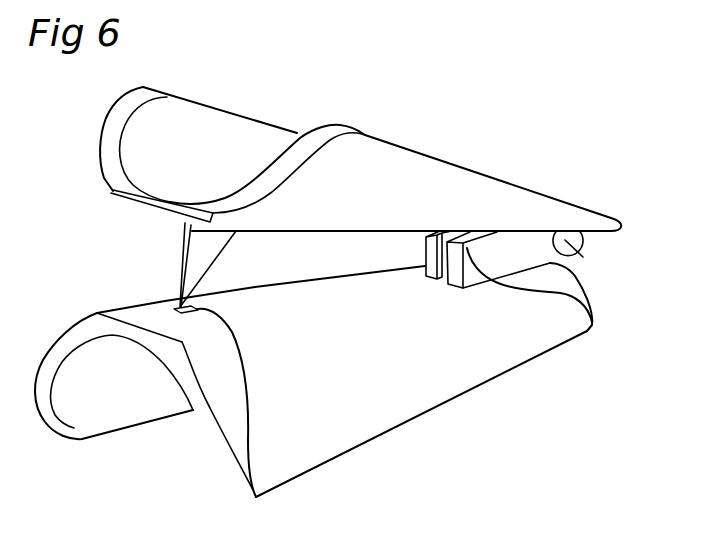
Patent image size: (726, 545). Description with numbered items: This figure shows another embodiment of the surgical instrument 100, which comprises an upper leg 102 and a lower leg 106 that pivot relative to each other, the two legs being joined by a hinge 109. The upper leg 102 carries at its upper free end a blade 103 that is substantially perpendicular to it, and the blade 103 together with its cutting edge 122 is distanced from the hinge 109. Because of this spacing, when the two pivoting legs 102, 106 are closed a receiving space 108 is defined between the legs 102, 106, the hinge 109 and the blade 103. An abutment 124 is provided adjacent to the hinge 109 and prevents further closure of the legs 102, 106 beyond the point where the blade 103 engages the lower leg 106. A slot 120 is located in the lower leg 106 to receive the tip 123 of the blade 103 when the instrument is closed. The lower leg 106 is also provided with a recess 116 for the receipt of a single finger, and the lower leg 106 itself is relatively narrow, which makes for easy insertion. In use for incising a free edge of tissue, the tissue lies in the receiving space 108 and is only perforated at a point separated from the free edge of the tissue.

The surgical instrument 100 is at (444, 133).
The upper leg 102 is at (196, 101).
The blade 103 is at (184, 230).
The lower leg 106 is at (343, 453).
The receiving space 108 is at (337, 258).
The hinge 109 is at (583, 257).
The recess 116 is at (127, 393).
The slot 120 is at (256, 497).
The cutting edge 122 is at (215, 262).
The tip 123 is at (176, 305).
The abutment 124 is at (586, 331).